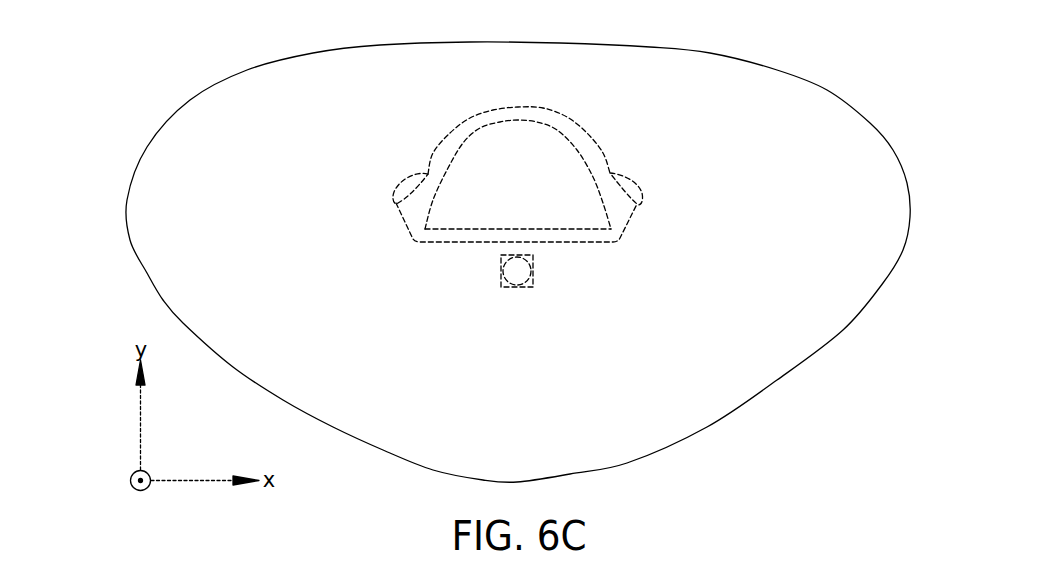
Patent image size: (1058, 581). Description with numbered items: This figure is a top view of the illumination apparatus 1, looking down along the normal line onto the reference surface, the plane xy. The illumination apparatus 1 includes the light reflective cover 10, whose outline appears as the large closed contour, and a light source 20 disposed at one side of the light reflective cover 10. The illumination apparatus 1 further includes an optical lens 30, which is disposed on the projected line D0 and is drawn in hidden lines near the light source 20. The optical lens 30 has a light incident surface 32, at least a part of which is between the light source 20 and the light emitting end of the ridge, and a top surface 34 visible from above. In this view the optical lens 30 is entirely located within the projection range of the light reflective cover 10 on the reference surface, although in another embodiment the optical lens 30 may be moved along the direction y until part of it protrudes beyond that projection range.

The illumination apparatus 1 is at (222, 46).
The light reflective cover 10 is at (135, 228).
The light source 20 is at (533, 282).
The optical lens 30 is at (636, 212).
The light incident surface 32 is at (565, 238).
The top surface 34 is at (540, 153).